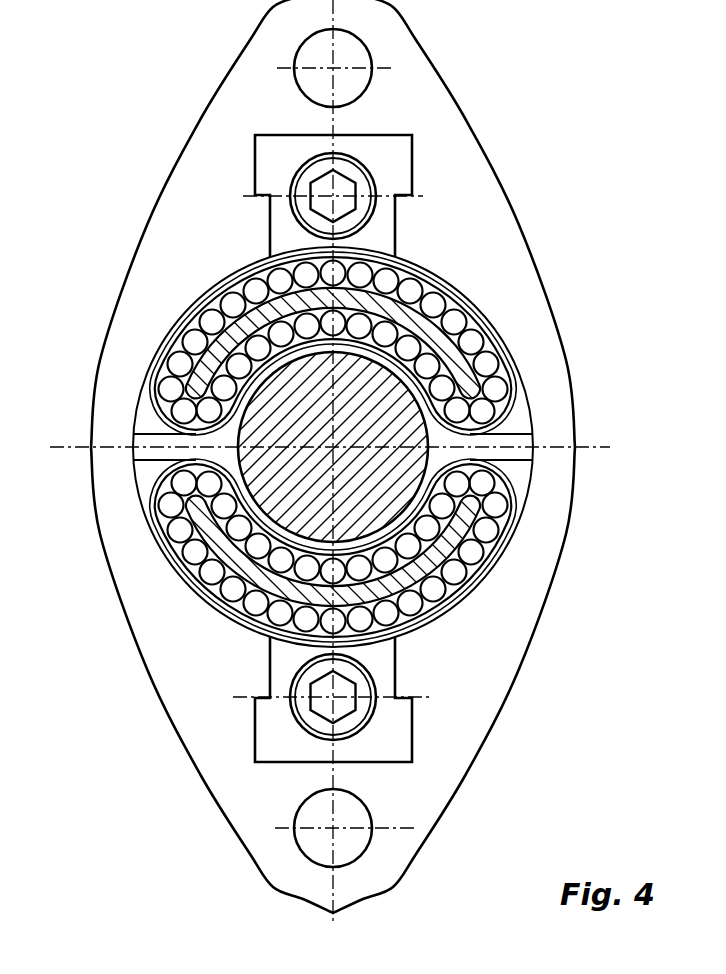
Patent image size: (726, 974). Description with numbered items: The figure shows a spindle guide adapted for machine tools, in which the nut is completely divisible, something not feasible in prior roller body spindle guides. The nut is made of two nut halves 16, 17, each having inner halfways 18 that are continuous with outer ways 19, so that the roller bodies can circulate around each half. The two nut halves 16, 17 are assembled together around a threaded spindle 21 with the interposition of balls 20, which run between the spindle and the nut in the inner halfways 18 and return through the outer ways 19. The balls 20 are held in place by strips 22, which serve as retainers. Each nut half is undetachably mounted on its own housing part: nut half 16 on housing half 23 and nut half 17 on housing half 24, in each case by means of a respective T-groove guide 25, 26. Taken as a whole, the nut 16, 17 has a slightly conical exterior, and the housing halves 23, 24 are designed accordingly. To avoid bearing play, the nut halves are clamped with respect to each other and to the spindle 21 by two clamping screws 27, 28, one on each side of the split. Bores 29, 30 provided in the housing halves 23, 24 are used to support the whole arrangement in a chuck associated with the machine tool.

The nut half 16 is at (205, 298).
The nut half 17 is at (322, 600).
The inner halfways 18 is at (425, 505).
The outer ways 19 is at (467, 580).
The balls 20 is at (190, 348).
The threaded spindle 21 is at (278, 465).
The strips 22 is at (178, 406).
The housing half 23 is at (177, 225).
The housing half 24 is at (230, 677).
The T-groove guide 25 is at (255, 147).
The T-groove guide 26 is at (270, 738).
The clamping screw 27 is at (345, 188).
The clamping screw 28 is at (343, 691).
The bore 29 is at (353, 52).
The bore 30 is at (355, 813).